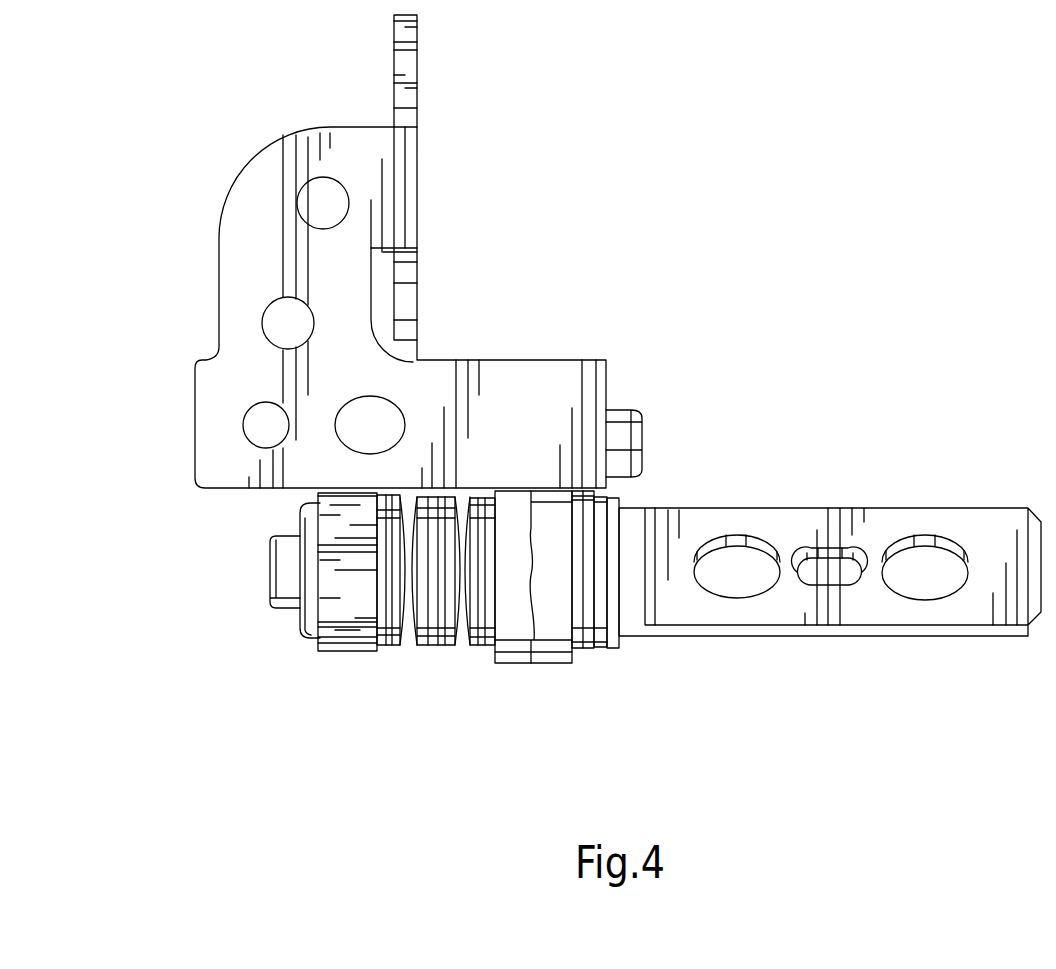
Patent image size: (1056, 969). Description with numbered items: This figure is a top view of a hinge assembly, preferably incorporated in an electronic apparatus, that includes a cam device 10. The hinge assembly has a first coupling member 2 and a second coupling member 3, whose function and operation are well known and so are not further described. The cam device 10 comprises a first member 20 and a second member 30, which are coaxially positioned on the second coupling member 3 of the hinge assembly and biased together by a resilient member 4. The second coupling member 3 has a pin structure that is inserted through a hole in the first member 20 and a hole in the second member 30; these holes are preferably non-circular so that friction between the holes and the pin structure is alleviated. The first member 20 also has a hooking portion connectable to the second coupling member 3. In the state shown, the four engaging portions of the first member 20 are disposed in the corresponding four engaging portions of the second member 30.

The first coupling member 2 is at (238, 237).
The second coupling member 3 is at (775, 603).
The resilient member 4 is at (425, 627).
The cam device 10 is at (538, 728).
The first member 20 is at (555, 637).
The second member 30 is at (516, 637).